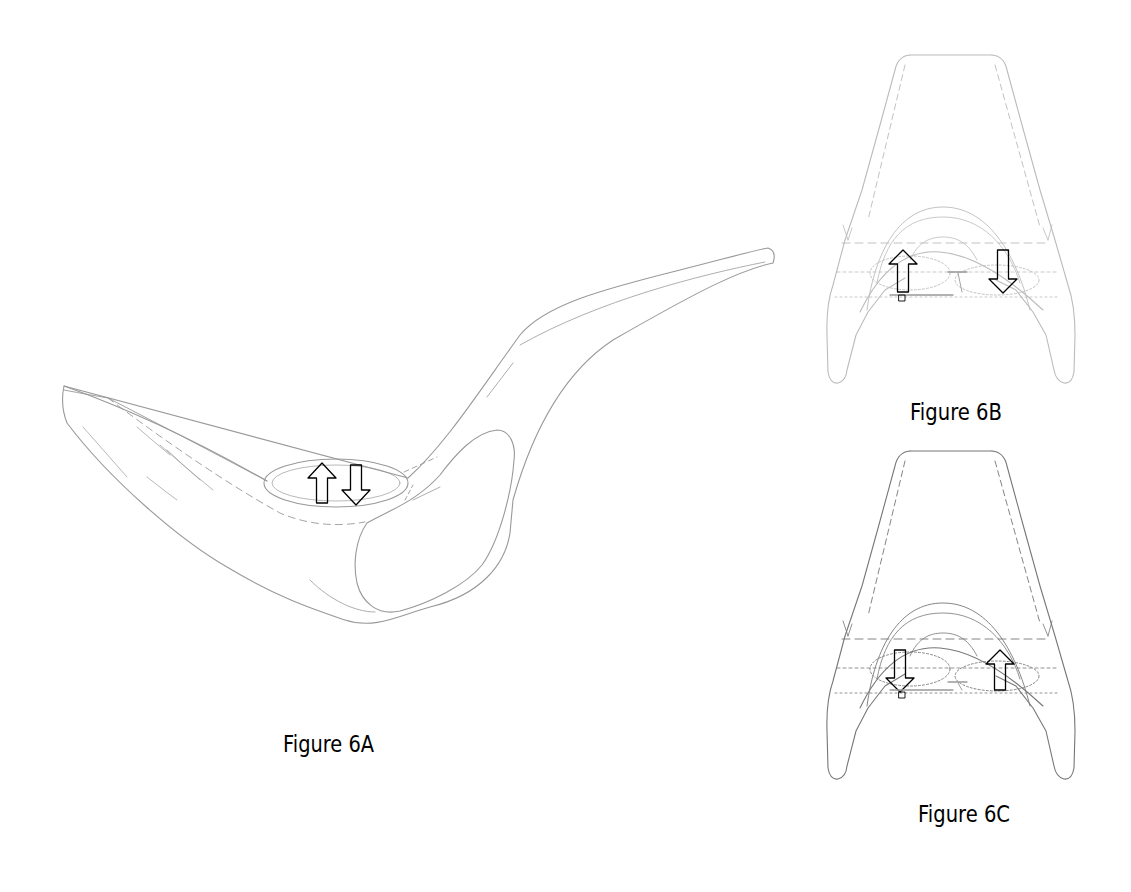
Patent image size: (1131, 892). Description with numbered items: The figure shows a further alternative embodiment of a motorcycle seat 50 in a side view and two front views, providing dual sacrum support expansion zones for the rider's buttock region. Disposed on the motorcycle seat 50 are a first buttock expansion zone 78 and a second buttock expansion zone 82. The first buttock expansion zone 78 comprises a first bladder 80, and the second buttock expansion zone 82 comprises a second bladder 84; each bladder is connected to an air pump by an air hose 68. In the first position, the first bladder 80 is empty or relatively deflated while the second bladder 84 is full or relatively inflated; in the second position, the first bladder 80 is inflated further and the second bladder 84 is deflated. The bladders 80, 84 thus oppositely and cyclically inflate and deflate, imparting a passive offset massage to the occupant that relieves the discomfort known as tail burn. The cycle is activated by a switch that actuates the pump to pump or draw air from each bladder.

In FIG. 6B, the motorcycle seat 50 is at (1047, 107).
In FIG. 6C, the motorcycle seat 50 is at (1047, 487).
In FIG. 6B, the air hose 68 is at (955, 296).
In FIG. 6C, the air hose 68 is at (955, 690).
In FIG. 6A, the first buttock expansion zone 78 is at (399, 418).
In FIG. 6B, the first buttock expansion zone 78 is at (1008, 329).
In FIG. 6C, the first buttock expansion zone 78 is at (1008, 727).
In FIG. 6A, the first bladder 80 is at (314, 462).
In FIG. 6B, the first bladder 80 is at (1030, 283).
In FIG. 6C, the first bladder 80 is at (1030, 677).
In FIG. 6B, the second buttock expansion zone 82 is at (897, 329).
In FIG. 6C, the second buttock expansion zone 82 is at (897, 725).
In FIG. 6B, the second bladder 84 is at (873, 280).
In FIG. 6C, the second bladder 84 is at (930, 686).